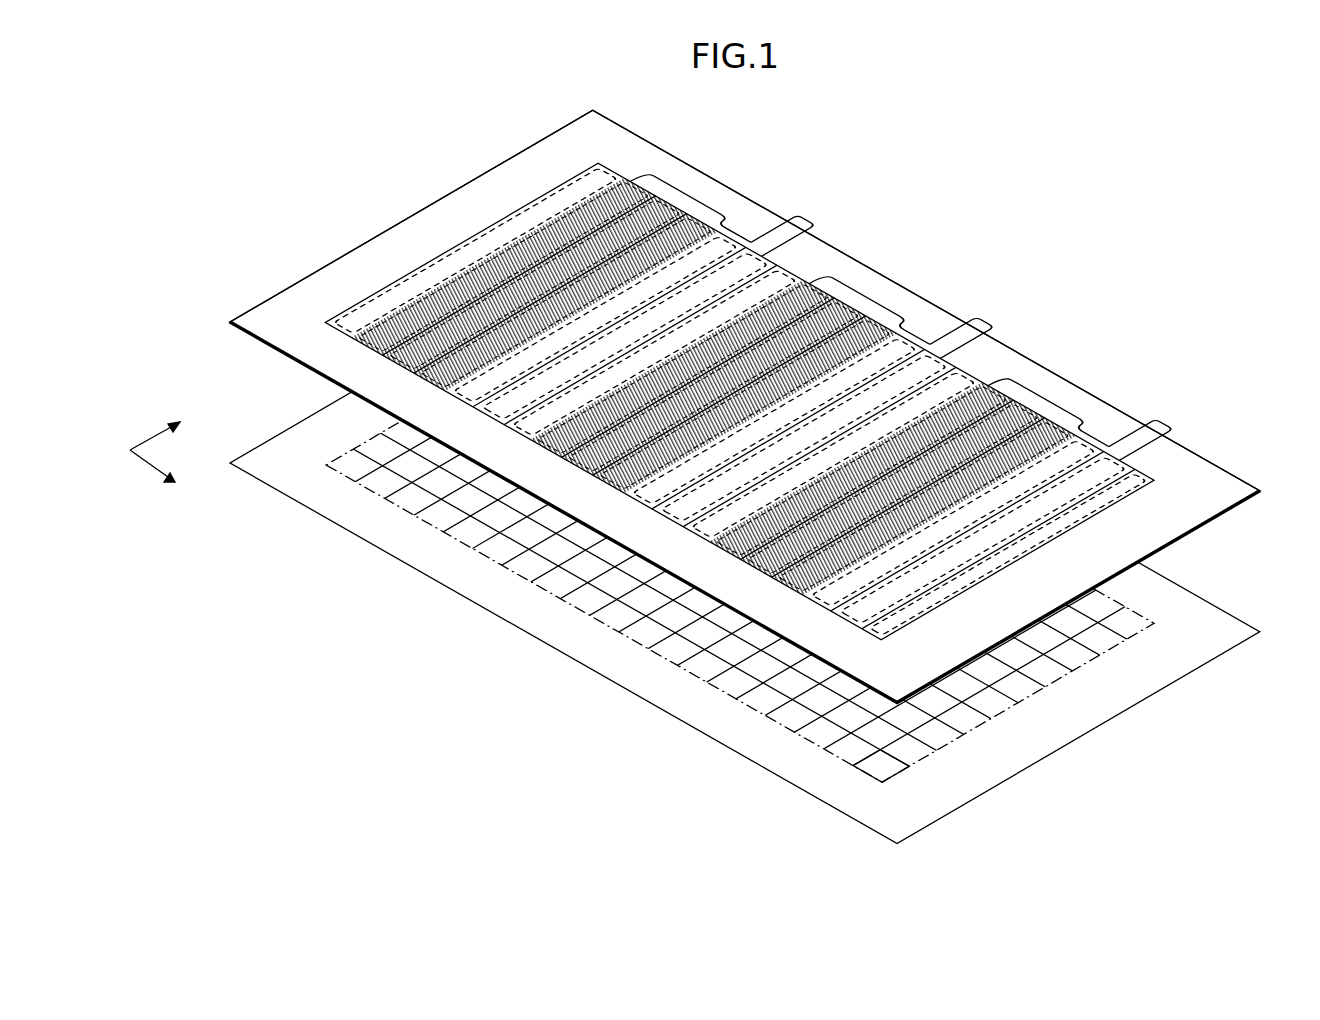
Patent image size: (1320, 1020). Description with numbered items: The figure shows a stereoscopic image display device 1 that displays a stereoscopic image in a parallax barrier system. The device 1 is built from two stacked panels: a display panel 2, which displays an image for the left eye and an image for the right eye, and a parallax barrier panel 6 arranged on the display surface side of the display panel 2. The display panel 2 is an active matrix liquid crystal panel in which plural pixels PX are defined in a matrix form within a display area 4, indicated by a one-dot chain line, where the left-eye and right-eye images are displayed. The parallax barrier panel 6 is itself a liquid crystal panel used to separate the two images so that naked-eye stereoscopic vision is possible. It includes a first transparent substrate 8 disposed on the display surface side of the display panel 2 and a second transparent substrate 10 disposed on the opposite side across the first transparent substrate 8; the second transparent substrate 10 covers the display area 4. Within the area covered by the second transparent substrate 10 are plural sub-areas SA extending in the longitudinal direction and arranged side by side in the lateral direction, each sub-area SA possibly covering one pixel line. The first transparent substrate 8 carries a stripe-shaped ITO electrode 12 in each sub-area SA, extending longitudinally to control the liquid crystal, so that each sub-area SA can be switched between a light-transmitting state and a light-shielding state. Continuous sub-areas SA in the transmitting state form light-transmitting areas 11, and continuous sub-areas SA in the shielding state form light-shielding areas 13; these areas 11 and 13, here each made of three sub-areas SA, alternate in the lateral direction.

The stereoscopic image display device 1 is at (1004, 229).
The display panel 2 is at (1078, 750).
The display area 4 is at (740, 544).
The pixel PX is at (881, 766).
The parallax barrier panel 6 is at (1218, 528).
The first transparent substrate 8 is at (745, 406).
The sub-area SA is at (739, 401).
The second transparent substrate 10 is at (745, 404).
The light-transmitting area 11 is at (958, 337).
The stripe-shaped electrode 12 is at (740, 401).
The light-shielding area 13 is at (874, 311).